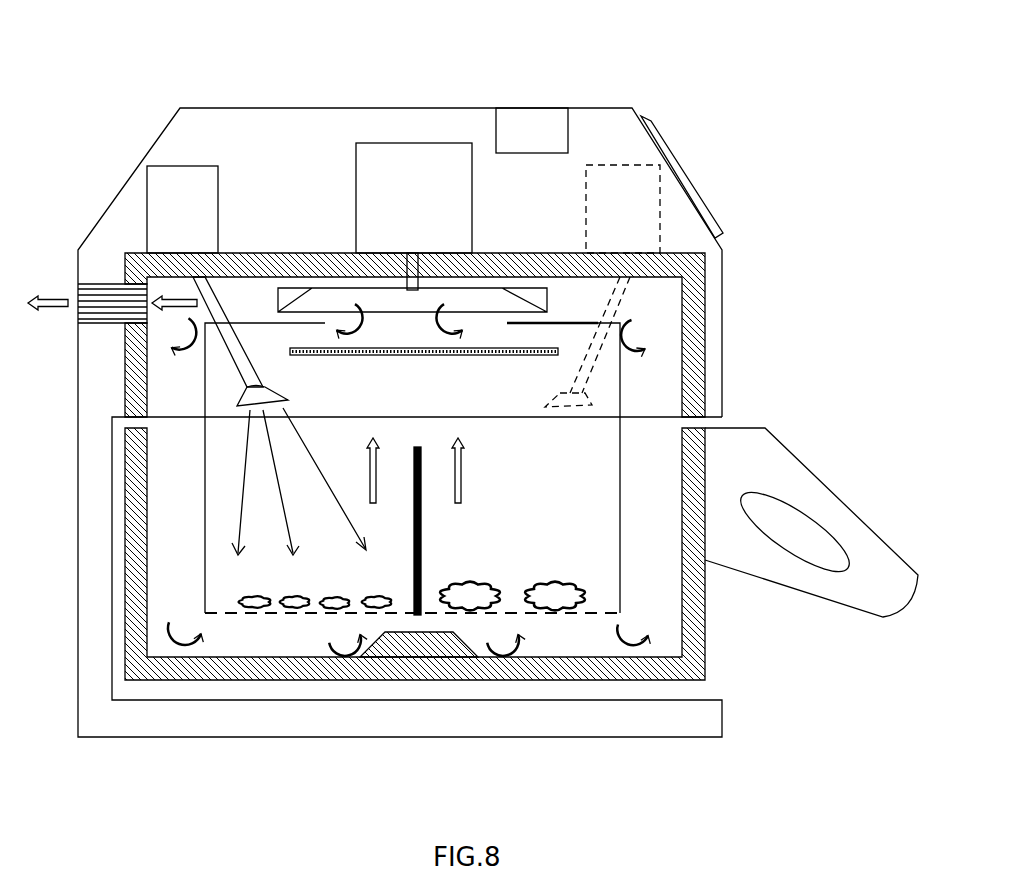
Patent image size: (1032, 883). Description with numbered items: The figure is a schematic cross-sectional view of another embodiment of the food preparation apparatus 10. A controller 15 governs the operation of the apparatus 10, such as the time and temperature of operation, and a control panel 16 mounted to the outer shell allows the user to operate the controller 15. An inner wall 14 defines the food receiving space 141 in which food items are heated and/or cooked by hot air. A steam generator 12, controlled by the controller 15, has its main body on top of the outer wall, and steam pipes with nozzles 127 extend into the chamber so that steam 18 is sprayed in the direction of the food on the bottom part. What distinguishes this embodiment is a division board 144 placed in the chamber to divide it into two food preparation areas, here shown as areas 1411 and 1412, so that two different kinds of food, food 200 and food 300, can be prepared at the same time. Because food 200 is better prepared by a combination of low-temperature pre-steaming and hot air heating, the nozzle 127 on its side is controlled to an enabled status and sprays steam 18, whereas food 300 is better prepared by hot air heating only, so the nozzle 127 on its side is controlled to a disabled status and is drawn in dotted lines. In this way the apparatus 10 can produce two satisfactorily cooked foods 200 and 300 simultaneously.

The apparatus 10 is at (273, 83).
The steam generator 12 is at (147, 188).
The inner wall 14 is at (205, 595).
The controller 15 is at (545, 115).
The control panel 16 is at (700, 182).
The steam 18 is at (312, 465).
The nozzle 127 is at (270, 387).
The food receiving space 141 is at (600, 458).
The division board 144 is at (422, 540).
The first region 1411 is at (220, 513).
The second region 1412 is at (598, 533).
The food 200 is at (305, 598).
The food 300 is at (472, 577).